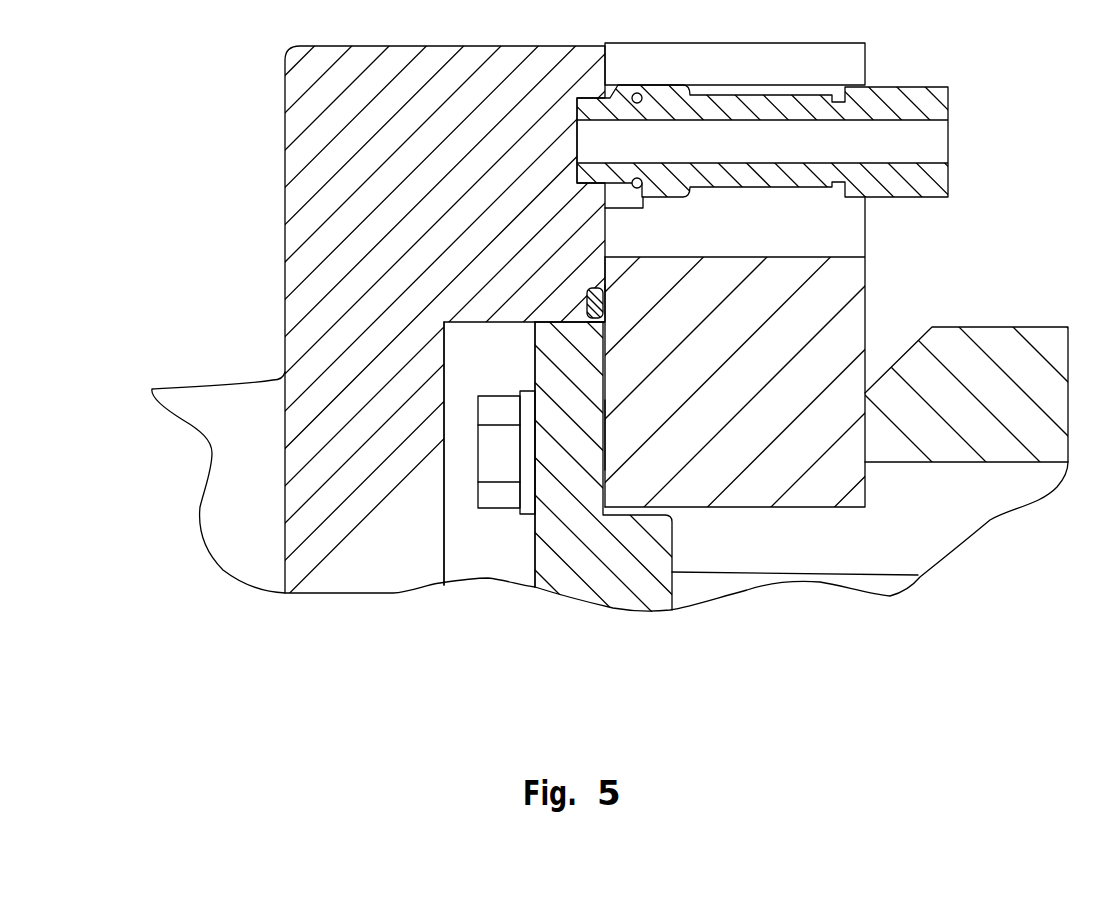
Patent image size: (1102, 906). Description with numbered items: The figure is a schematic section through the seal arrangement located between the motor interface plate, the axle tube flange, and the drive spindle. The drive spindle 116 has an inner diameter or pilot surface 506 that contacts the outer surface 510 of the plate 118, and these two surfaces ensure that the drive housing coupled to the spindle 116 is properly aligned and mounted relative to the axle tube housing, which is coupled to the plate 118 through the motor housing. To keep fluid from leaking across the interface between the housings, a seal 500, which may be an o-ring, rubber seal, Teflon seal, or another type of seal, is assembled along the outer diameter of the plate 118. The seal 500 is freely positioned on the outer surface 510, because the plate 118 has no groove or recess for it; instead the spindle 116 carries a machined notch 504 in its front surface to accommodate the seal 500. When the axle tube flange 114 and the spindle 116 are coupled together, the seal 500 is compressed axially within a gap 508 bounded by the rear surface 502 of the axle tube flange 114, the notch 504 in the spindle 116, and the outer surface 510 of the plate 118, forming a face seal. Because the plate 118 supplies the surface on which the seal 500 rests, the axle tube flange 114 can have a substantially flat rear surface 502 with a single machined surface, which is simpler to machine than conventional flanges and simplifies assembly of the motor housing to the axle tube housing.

The axle tube flange 114 is at (835, 307).
The drive spindle 116 is at (302, 200).
The plate 118 is at (587, 568).
The seal 500 is at (595, 290).
The rear surface 502 is at (607, 428).
The notch 504 is at (583, 297).
The pilot surface 506 is at (532, 327).
The gap 508 is at (606, 285).
The outer surface 510 is at (546, 315).